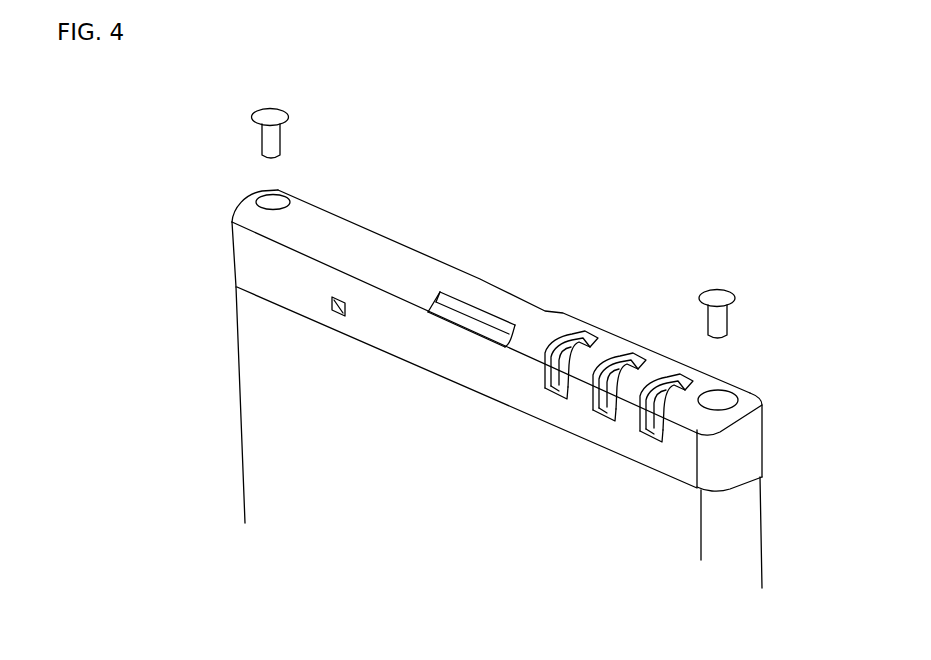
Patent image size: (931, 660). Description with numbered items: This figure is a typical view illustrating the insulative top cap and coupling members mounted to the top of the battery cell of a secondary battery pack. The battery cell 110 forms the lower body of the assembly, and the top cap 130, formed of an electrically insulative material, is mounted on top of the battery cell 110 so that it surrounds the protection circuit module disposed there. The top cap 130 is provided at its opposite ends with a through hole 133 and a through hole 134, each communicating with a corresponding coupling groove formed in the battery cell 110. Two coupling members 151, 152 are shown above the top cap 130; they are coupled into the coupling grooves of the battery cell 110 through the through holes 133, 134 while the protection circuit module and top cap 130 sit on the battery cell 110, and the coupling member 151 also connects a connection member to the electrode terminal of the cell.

The battery cell 110 is at (237, 460).
The top cap 130 is at (228, 251).
The through hole 133 is at (728, 400).
The through hole 134 is at (273, 202).
The coupling member 151 is at (719, 298).
The coupling member 152 is at (275, 135).